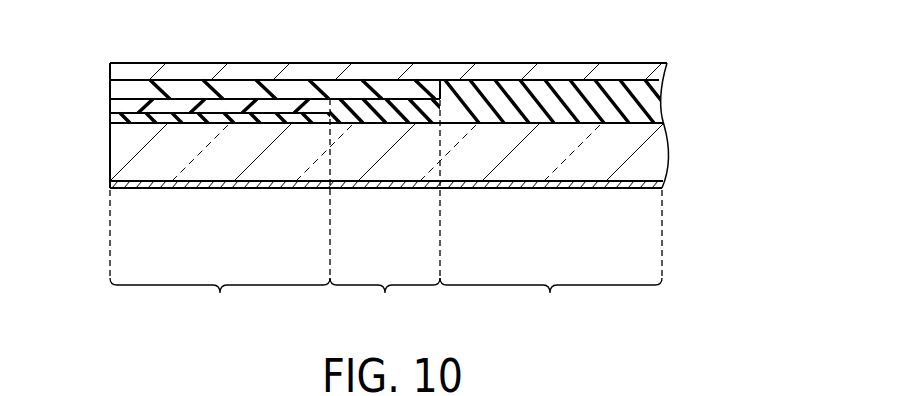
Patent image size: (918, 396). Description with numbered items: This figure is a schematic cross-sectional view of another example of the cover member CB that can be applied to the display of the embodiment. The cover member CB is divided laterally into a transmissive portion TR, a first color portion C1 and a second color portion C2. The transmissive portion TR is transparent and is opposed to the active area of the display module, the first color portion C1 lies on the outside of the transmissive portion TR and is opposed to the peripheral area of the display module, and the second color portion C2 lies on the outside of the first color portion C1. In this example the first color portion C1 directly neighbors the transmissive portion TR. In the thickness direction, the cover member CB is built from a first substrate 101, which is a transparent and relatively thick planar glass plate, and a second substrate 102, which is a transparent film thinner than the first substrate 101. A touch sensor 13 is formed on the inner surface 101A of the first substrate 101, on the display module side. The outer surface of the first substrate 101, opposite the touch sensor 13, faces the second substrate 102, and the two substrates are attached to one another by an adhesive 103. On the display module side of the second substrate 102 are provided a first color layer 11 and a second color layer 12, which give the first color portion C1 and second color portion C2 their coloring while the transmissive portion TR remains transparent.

The first color layer 11 is at (112, 93).
The second color layer 12 is at (112, 111).
The touch sensor 13 is at (112, 187).
The first substrate 101 is at (664, 153).
The inner surface 101A is at (641, 191).
The second substrate 102 is at (666, 66).
The adhesive 103 is at (660, 99).
The cover member CB is at (703, 42).
The first color portion C1 is at (386, 312).
The second color portion C2 is at (219, 312).
The transmissive portion TR is at (550, 312).